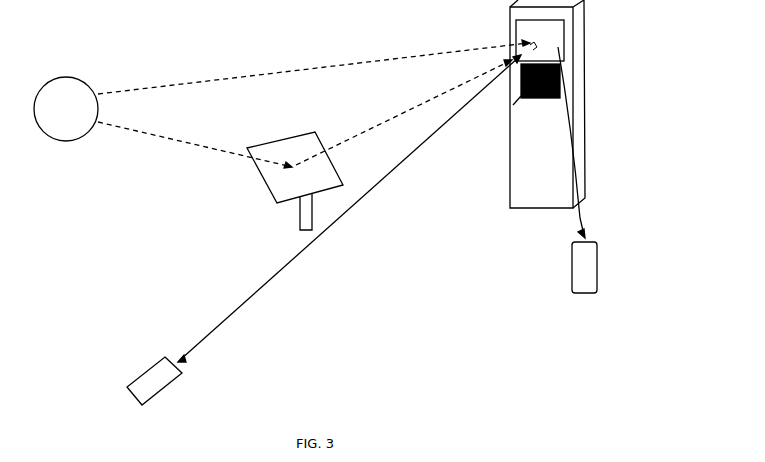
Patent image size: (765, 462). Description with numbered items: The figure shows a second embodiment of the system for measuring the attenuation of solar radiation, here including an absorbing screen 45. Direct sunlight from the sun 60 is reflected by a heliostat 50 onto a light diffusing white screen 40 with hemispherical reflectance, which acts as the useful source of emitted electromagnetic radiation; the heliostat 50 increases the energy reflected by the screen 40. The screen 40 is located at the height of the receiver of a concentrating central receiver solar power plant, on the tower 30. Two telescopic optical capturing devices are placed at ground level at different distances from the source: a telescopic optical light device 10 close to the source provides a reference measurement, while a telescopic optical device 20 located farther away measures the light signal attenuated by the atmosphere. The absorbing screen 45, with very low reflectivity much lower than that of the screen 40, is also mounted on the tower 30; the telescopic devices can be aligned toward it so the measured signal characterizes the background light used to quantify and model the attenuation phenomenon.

The telescopic optical light device 10 is at (585, 268).
The telescopic optical device 20 is at (160, 382).
The tower 30 is at (538, 160).
The screen 40 is at (543, 28).
The absorbing screen 45 is at (520, 97).
The heliostat 50 is at (288, 181).
The sun 60 is at (66, 109).